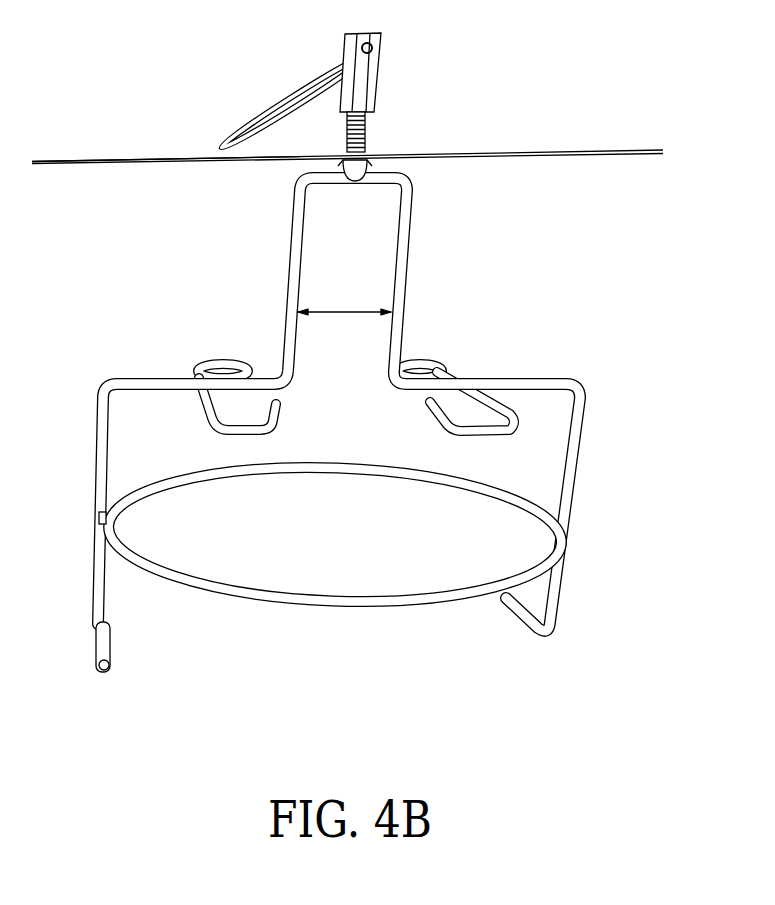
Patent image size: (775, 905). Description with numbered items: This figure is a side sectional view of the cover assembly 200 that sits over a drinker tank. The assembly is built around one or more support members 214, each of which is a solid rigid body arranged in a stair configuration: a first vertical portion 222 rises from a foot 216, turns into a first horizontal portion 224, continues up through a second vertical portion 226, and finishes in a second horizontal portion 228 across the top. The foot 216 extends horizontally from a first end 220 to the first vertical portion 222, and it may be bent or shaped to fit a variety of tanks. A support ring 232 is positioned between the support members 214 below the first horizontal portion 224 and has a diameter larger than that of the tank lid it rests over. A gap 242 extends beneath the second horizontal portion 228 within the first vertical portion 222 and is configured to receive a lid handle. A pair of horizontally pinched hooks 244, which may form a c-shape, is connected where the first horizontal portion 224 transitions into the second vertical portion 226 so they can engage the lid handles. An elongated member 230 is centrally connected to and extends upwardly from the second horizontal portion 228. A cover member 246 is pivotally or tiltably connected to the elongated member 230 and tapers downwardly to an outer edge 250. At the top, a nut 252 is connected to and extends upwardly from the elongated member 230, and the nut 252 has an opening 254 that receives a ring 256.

The cover assembly 200 is at (373, 406).
The support member 214 is at (342, 404).
The foot 216 is at (110, 643).
The first end 220 is at (103, 672).
The first vertical portion 222 is at (100, 437).
The first horizontal portion 224 is at (158, 377).
The second vertical portion 226 is at (290, 242).
The second horizontal portion 228 is at (368, 175).
The elongated member 230 is at (366, 130).
The support ring 232 is at (367, 600).
The gap 242 is at (358, 310).
The horizontally pinched hook 244 is at (270, 427).
The cover member 246 is at (157, 163).
The outer edge 250 is at (663, 152).
The nut 252 is at (379, 71).
The opening 254 is at (374, 52).
The ring 256 is at (278, 92).